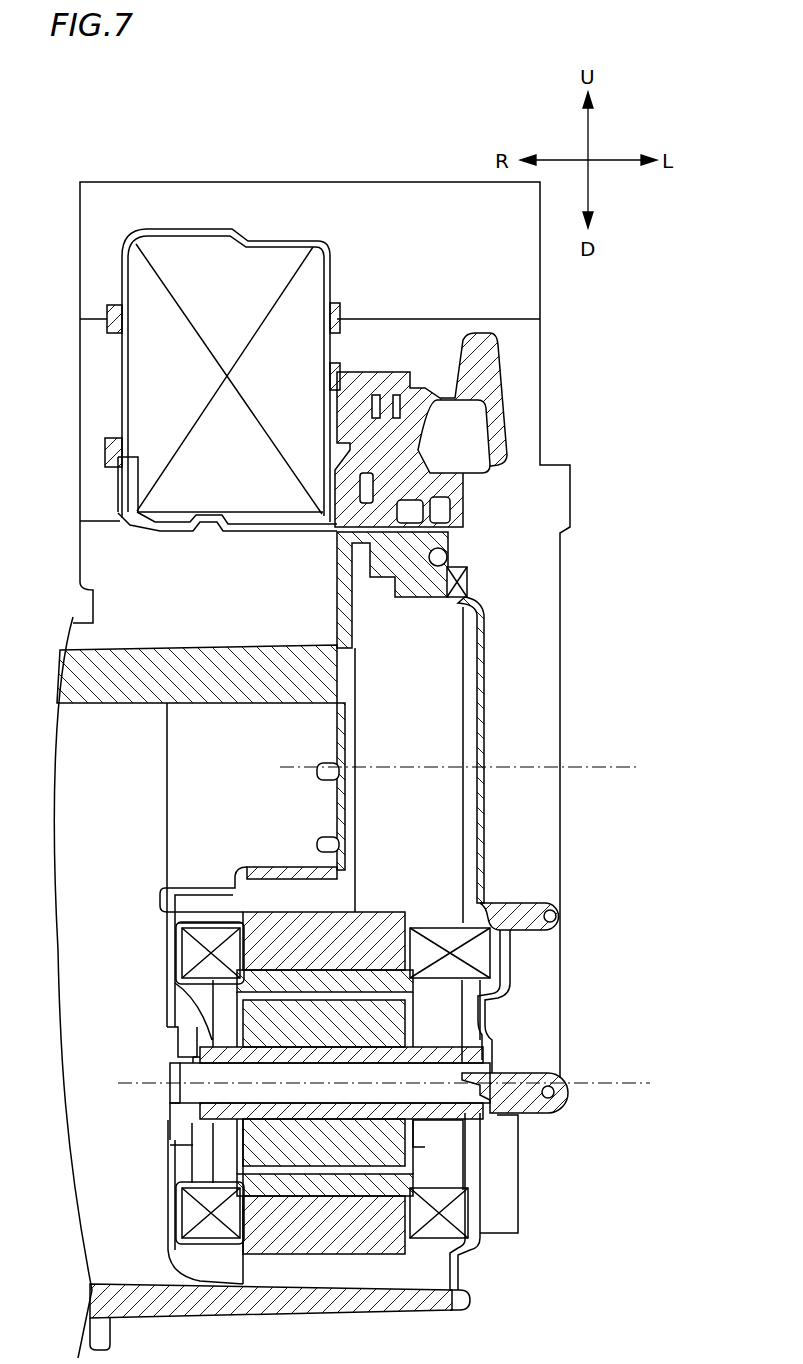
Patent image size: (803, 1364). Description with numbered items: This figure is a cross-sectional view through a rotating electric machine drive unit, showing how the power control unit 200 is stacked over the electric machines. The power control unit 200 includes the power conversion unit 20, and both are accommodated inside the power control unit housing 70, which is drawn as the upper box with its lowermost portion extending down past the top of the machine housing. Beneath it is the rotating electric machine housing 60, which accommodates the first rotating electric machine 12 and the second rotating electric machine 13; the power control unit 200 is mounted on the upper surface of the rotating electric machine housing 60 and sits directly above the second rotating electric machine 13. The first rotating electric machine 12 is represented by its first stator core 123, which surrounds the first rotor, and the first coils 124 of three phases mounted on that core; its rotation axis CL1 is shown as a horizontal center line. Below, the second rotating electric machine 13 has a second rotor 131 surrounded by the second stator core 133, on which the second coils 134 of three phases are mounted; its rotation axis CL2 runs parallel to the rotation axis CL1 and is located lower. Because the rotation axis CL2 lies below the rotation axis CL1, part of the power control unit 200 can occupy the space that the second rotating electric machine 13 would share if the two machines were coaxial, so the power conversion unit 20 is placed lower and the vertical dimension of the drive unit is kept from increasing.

The power control unit 200 is at (321, 588).
The power control unit housing 70 is at (115, 228).
The power conversion unit 20 is at (173, 268).
The rotating electric machine housing 60 is at (432, 581).
The first rotating electric machine 12 is at (342, 977).
The first stator core 123 is at (427, 688).
The first coils 124 is at (472, 727).
The second stator core 133 is at (370, 918).
The second coils 134 is at (212, 940).
The second rotor 131 is at (378, 1017).
The second rotating electric machine 13 is at (450, 1073).
The rotation axis of the first rotating electric machine CL1 is at (628, 765).
The rotation axis of the second rotating electric machine CL2 is at (627, 1093).